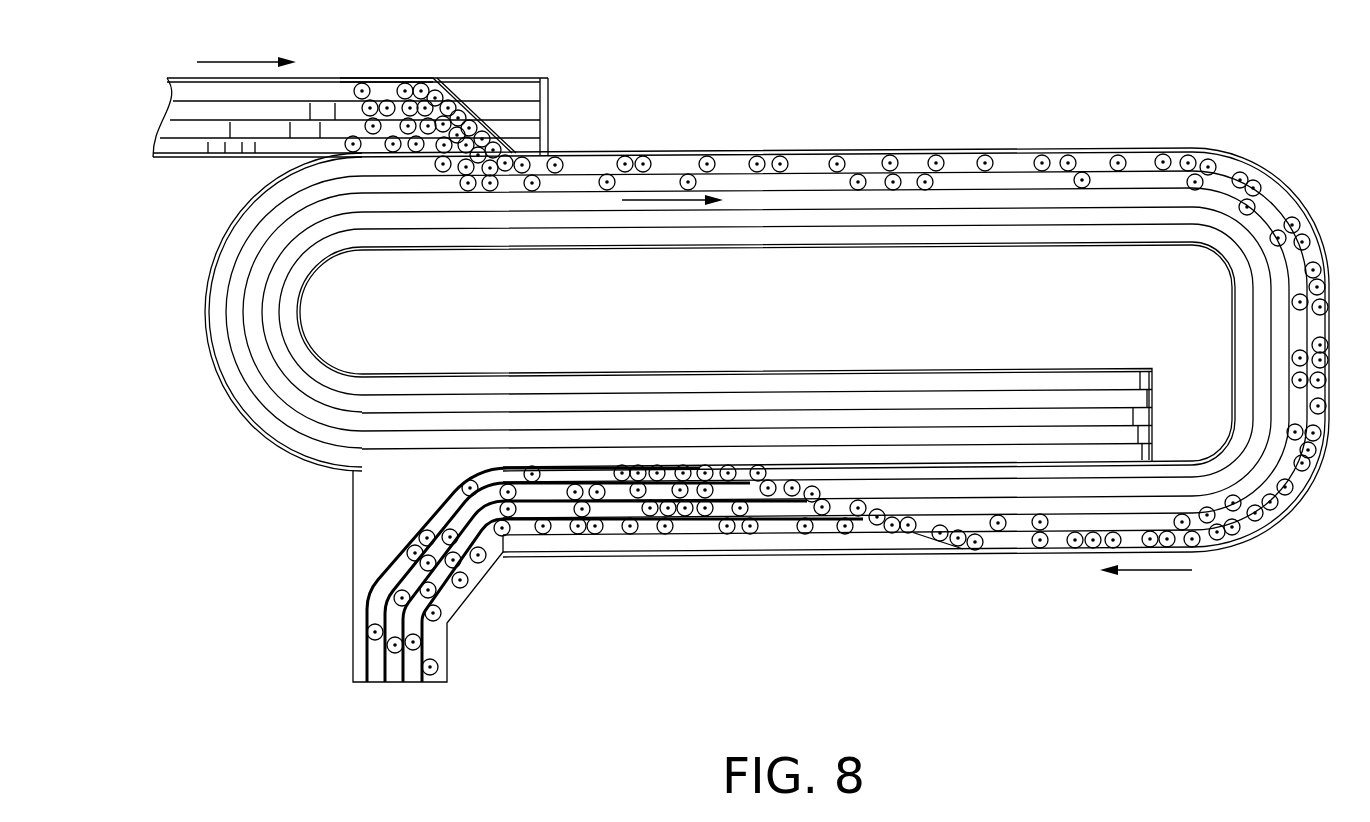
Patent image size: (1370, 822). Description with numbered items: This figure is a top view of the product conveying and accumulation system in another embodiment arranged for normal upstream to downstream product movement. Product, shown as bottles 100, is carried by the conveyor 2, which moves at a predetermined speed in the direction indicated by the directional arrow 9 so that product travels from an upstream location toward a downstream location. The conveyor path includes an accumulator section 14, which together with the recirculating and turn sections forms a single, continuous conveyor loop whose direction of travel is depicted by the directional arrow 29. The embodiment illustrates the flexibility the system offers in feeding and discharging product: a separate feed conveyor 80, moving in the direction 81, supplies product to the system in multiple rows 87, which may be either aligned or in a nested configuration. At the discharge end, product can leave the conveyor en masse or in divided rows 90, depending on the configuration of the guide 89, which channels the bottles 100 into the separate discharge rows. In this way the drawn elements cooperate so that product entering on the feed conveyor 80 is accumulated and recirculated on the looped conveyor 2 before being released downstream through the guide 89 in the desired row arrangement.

The conveyor 2 is at (1055, 537).
The directional arrow 9 is at (1146, 590).
The accumulator section 14 is at (672, 418).
The directional arrow 29 is at (672, 213).
The conveyor 80 is at (350, 78).
The direction 81 is at (246, 48).
The rows 87 is at (180, 110).
The guide 89 is at (378, 537).
The divided rows 90 is at (412, 627).
The bottles 100 is at (1045, 545).